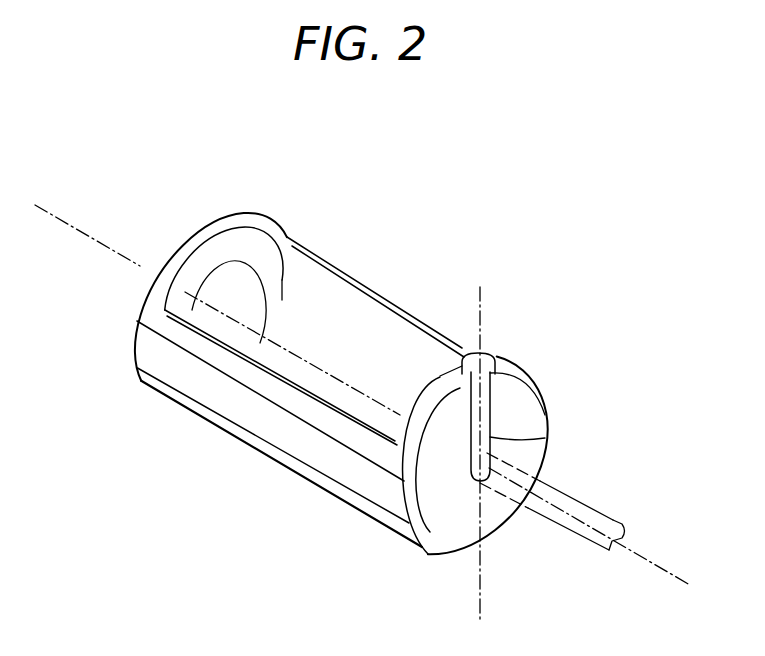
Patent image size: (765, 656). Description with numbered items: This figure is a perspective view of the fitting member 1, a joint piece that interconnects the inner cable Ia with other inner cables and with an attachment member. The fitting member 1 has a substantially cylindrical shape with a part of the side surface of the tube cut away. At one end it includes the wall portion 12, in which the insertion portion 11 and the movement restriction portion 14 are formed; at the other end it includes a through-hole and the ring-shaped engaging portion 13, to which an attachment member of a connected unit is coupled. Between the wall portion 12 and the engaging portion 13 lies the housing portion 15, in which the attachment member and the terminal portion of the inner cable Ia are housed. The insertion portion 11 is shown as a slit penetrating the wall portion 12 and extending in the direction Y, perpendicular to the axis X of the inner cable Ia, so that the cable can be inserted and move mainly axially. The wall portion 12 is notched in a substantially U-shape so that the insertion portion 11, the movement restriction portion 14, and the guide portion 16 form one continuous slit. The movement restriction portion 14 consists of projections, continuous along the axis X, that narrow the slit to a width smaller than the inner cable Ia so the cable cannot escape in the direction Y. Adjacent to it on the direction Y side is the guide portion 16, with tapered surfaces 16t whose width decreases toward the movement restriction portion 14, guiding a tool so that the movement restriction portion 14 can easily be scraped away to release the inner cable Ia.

The fitting member 1 is at (374, 193).
The insertion portion 11 is at (545, 438).
The wall portion 12 is at (438, 512).
The engaging portion 13 is at (229, 245).
The movement restriction portion 14 is at (497, 393).
The housing portion 15 is at (280, 433).
The guide portion 16 is at (462, 360).
The tapered surfaces 16t is at (490, 357).
The inner cable Ia is at (617, 513).
The axis X is at (667, 564).
The direction Y is at (480, 288).